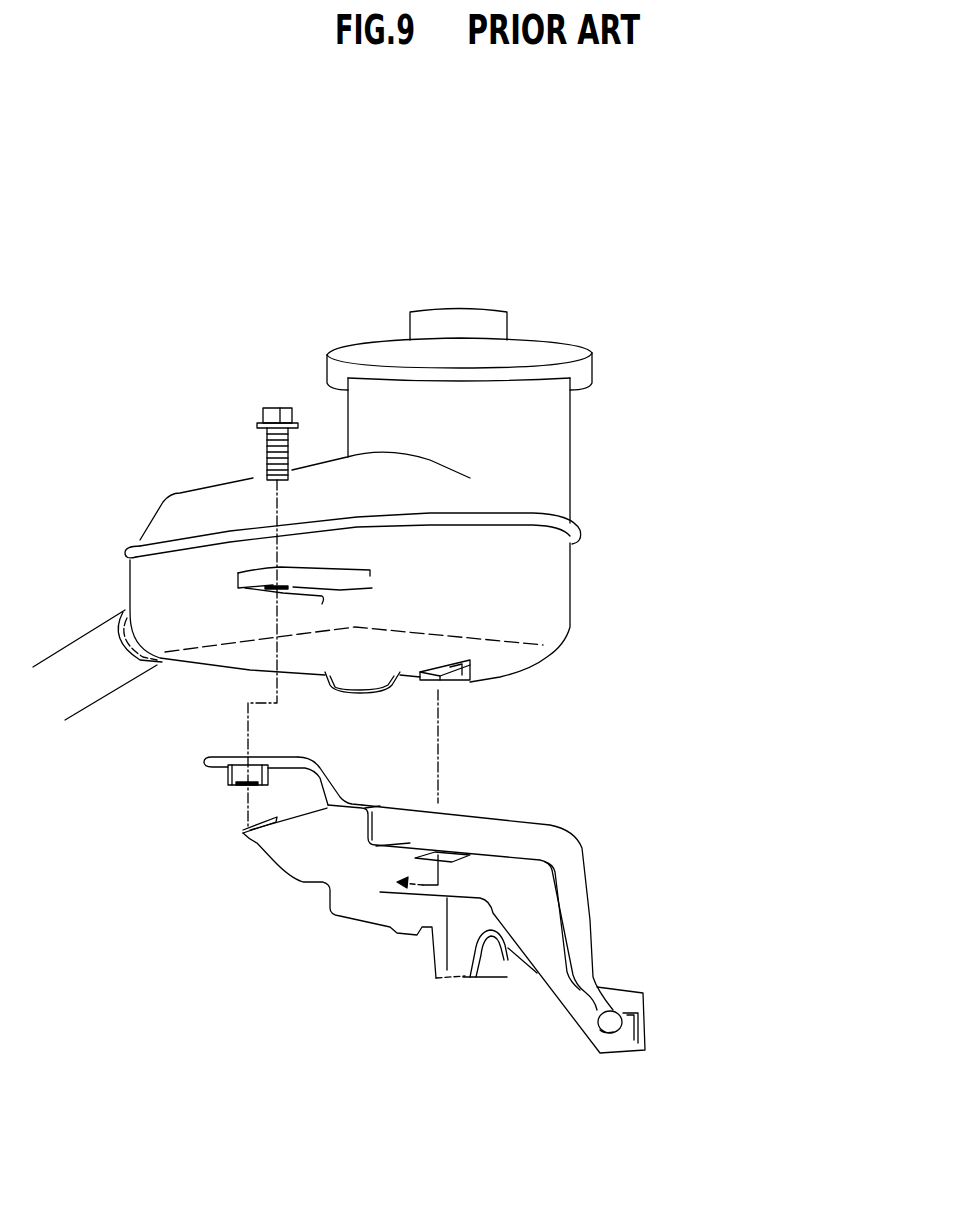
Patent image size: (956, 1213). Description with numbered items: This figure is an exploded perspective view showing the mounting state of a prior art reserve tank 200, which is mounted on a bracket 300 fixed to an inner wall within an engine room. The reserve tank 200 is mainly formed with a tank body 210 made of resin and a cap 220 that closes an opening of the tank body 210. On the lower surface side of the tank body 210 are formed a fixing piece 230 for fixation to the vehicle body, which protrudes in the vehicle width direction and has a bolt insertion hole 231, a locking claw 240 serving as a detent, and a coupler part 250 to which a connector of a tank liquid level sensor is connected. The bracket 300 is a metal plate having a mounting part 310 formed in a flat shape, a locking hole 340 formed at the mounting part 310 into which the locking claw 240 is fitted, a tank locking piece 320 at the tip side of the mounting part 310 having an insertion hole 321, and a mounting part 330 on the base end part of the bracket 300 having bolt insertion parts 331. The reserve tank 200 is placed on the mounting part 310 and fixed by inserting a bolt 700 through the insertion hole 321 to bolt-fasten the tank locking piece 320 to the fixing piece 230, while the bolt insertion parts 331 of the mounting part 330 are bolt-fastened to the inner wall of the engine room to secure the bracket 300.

The reserve tank 200 is at (313, 385).
The tank body 210 is at (551, 468).
The cap 220 is at (583, 368).
The fixing piece 230 is at (250, 590).
The bolt insertion hole 231 is at (282, 590).
The locking claw 240 is at (448, 683).
The coupler part 250 is at (365, 682).
The bolt 700 is at (267, 417).
The bracket 300 is at (582, 855).
The mounting part 310 is at (383, 803).
The tank locking piece 320 is at (225, 755).
The insertion hole 321 is at (252, 785).
The mounting part 330 is at (593, 1015).
The bolt insertion part 331 is at (490, 977).
The locking hole 340 is at (458, 860).